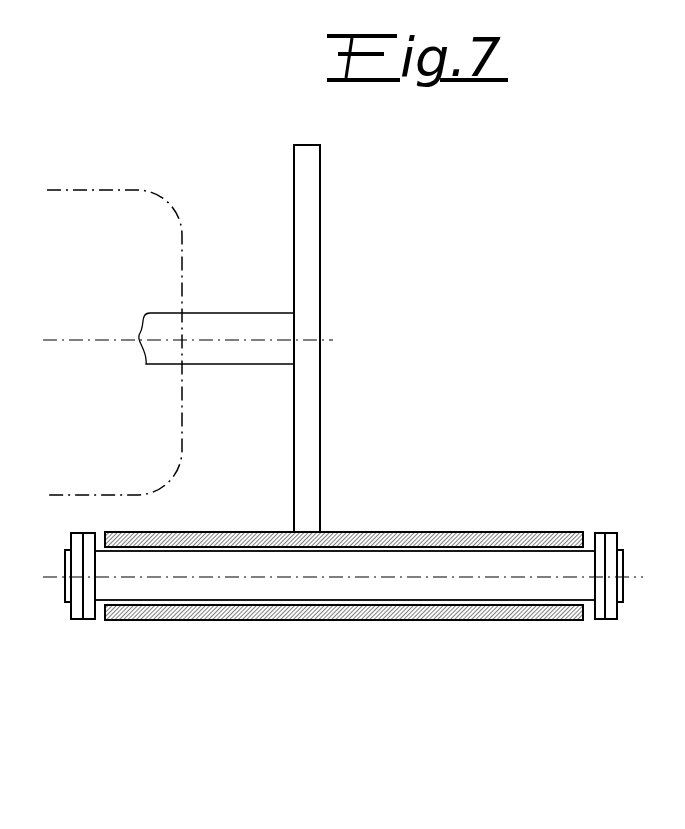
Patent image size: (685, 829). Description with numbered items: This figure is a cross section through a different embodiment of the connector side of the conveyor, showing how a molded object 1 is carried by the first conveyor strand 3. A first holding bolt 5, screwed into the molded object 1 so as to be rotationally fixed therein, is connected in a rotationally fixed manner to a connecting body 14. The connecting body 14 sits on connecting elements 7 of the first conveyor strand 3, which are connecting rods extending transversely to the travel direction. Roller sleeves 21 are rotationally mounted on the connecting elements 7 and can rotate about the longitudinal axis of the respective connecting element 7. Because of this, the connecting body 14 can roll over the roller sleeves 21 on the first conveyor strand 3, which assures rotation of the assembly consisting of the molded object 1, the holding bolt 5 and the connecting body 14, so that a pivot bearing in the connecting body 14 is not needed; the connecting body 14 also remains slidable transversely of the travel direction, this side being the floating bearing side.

The molded object 1 is at (131, 185).
The first holding bolt 5 is at (227, 311).
The connecting body 14 is at (308, 230).
The connecting element 7 is at (415, 563).
The roller sleeve 21 is at (506, 529).
The first conveyor strand 3 is at (568, 633).